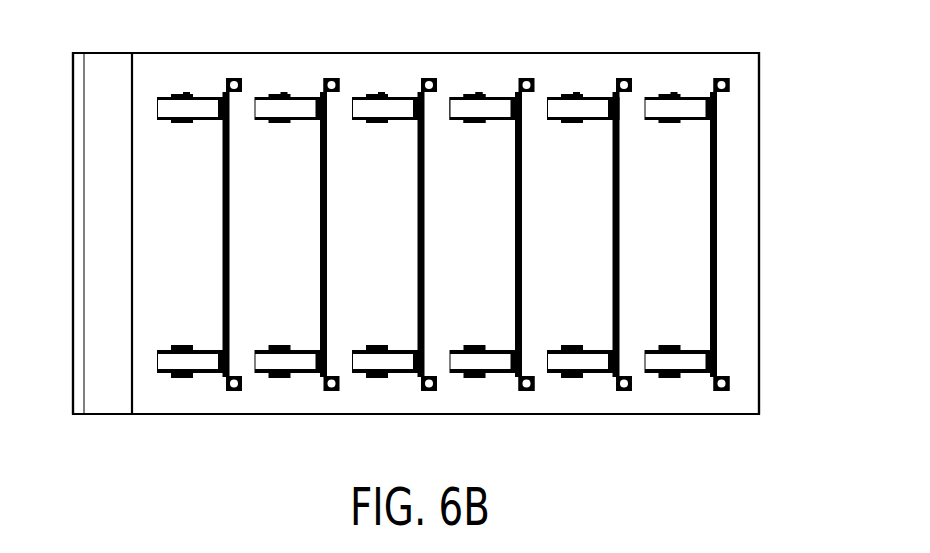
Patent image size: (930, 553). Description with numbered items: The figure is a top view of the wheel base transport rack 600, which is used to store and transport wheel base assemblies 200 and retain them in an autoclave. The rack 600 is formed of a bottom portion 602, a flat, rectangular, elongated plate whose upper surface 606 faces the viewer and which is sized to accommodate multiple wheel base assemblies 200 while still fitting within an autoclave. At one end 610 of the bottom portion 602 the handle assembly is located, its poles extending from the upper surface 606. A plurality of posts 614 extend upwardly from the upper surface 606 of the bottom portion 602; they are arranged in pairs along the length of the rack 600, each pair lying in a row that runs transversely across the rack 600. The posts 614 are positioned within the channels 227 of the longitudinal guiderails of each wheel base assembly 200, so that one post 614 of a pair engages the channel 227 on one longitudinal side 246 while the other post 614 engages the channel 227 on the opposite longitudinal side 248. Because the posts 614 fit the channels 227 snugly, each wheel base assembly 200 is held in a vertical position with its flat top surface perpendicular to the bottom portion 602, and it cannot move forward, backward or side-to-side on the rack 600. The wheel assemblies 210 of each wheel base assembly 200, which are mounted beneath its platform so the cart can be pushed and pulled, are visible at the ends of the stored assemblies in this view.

The rack 600 is at (98, 476).
The bottom portion 602 is at (242, 417).
The upper surface 606 is at (743, 235).
The end of the bottom portion 610 is at (97, 70).
The posts 614 is at (330, 78).
The wheel base assembly 200 is at (415, 392).
The wheel assemblies 210 is at (567, 95).
The channels 227 is at (428, 377).
The first longitudinal side 246 is at (729, 80).
The second longitudinal side 248 is at (718, 391).